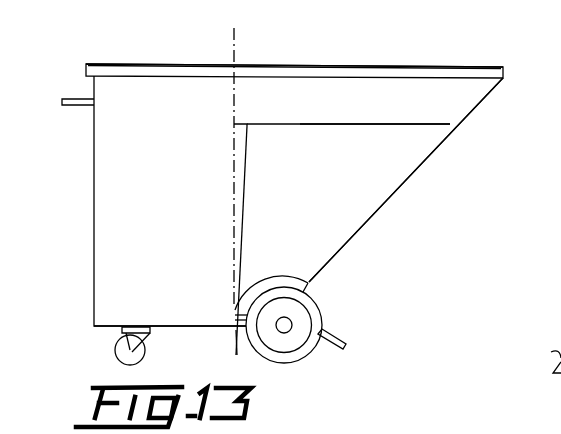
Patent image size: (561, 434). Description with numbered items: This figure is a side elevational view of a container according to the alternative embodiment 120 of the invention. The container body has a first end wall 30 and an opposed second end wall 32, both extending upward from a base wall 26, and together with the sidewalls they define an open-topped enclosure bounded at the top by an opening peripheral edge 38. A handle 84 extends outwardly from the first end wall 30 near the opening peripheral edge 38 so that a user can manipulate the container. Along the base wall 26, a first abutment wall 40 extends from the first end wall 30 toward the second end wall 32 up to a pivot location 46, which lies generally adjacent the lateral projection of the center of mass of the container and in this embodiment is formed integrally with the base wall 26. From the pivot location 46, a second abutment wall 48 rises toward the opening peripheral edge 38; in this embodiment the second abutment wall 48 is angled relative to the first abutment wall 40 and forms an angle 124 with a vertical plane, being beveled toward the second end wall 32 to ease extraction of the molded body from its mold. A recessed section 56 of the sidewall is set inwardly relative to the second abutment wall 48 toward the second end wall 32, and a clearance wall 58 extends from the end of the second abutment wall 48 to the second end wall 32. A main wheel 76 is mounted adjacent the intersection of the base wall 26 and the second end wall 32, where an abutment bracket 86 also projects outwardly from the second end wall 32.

The embodiment 120 is at (393, 50).
The opening peripheral edge 38 is at (425, 67).
The second end wall 32 is at (466, 112).
The angle 124 is at (247, 123).
The clearance wall 58 is at (385, 132).
The second abutment wall 48 is at (255, 207).
The recessed section 56 is at (322, 249).
The main wheel 76 is at (322, 316).
The abutment bracket 86 is at (346, 348).
The pivot location 46 is at (237, 354).
The first abutment wall 40 is at (192, 333).
The base wall 26 is at (108, 328).
The first end wall 30 is at (94, 166).
The handle 84 is at (87, 105).